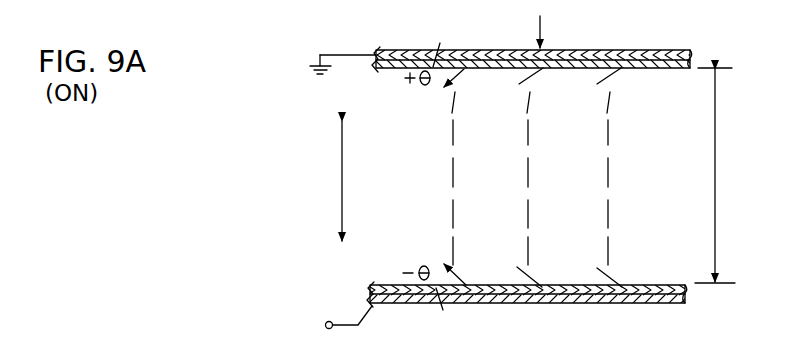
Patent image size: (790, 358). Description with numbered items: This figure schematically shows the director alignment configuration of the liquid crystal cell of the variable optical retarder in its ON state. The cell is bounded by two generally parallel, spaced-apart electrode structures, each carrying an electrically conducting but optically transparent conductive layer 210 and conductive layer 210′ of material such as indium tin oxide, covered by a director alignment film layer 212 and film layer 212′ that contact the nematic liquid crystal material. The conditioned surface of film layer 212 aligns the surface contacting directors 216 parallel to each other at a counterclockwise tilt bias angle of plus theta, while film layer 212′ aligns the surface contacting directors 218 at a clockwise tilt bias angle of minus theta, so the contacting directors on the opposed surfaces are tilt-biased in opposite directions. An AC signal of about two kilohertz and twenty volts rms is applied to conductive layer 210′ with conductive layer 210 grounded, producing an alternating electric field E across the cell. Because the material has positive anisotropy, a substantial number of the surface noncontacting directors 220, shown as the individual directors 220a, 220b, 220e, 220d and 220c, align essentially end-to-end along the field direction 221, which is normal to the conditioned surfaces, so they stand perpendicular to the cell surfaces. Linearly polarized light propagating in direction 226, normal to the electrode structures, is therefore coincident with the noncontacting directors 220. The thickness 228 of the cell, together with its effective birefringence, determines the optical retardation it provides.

The conductive layer 210 is at (515, 41).
The director alignment film layer 212 is at (348, 80).
The light propagation direction 226 is at (540, 16).
The surface contacting directors 216 is at (457, 78).
The surface contacting directors 218 is at (458, 280).
The surface noncontacting directors 220 is at (446, 142).
The surface noncontacting director 220a is at (455, 103).
The surface noncontacting director 220b is at (454, 128).
The surface noncontacting director 220c is at (454, 244).
The surface noncontacting director 220d is at (454, 213).
The surface noncontacting director 220e is at (454, 168).
The electric field direction 221 is at (343, 180).
The thickness 228 is at (715, 193).
The conductive layer 210' is at (481, 298).
The director alignment film layer 212' is at (350, 291).